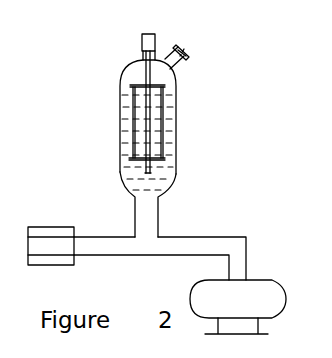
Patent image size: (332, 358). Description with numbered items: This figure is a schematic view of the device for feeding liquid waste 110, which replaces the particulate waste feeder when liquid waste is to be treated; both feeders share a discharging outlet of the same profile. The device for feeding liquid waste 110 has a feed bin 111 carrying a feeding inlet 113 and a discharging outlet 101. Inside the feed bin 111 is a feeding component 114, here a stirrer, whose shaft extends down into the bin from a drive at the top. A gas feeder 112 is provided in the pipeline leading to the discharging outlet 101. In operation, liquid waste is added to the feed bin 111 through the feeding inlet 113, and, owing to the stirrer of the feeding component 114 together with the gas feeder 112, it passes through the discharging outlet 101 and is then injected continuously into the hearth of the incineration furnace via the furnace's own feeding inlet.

The discharging outlet 101 is at (60, 242).
The device for feeding liquid waste 110 is at (152, 213).
The feed bin 111 is at (118, 130).
The gas feeder 112 is at (248, 295).
The feeding inlet 113 is at (183, 53).
The feeding component 114 is at (132, 78).